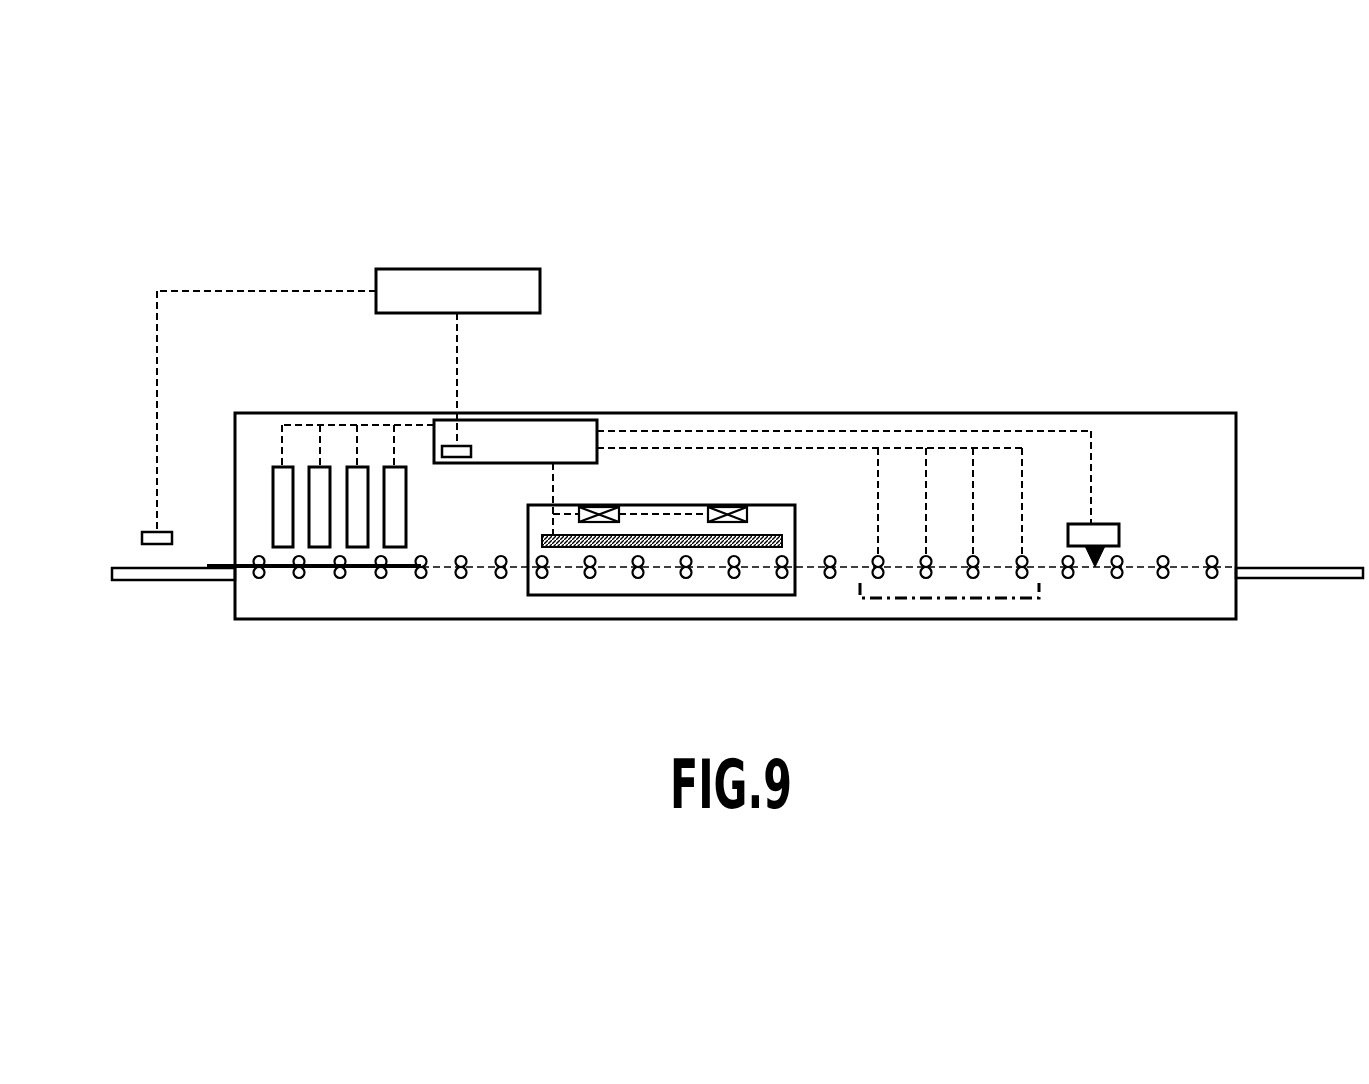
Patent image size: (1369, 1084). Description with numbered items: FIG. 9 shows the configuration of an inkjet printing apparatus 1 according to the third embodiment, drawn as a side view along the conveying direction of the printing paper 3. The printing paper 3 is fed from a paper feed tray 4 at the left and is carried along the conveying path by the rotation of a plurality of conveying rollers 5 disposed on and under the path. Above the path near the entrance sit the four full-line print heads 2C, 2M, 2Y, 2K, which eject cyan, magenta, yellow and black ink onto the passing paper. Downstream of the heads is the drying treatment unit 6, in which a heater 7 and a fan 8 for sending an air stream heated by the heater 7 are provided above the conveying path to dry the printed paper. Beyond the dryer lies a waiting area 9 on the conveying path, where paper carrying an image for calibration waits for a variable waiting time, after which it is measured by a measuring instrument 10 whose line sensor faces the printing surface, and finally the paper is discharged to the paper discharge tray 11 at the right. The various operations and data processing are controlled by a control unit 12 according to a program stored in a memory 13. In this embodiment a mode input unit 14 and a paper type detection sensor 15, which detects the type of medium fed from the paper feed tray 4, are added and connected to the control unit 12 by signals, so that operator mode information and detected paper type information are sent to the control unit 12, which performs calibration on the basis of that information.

The printing apparatus 1 is at (903, 413).
The print head 2C is at (282, 467).
The print head 2M is at (319, 467).
The print head 2Y is at (356, 467).
The print head 2K is at (393, 467).
The printing paper 3 is at (260, 580).
The paper feed tray 4 is at (172, 582).
The conveying rollers 5 is at (378, 579).
The drying treatment unit 6 is at (548, 595).
The heater 7 is at (767, 535).
The fan 8 is at (600, 507).
The waiting area 9 is at (907, 598).
The measuring instrument 10 is at (1103, 524).
The paper discharge tray 11 is at (1265, 568).
The control unit 12 is at (570, 448).
The memory 13 is at (447, 446).
The mode input unit 14 is at (462, 269).
The paper type detection sensor 15 is at (150, 532).